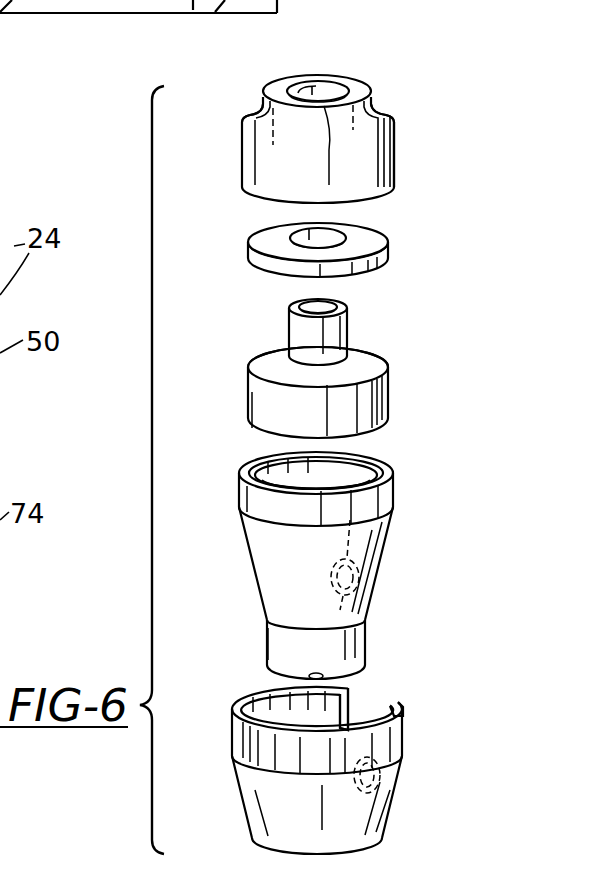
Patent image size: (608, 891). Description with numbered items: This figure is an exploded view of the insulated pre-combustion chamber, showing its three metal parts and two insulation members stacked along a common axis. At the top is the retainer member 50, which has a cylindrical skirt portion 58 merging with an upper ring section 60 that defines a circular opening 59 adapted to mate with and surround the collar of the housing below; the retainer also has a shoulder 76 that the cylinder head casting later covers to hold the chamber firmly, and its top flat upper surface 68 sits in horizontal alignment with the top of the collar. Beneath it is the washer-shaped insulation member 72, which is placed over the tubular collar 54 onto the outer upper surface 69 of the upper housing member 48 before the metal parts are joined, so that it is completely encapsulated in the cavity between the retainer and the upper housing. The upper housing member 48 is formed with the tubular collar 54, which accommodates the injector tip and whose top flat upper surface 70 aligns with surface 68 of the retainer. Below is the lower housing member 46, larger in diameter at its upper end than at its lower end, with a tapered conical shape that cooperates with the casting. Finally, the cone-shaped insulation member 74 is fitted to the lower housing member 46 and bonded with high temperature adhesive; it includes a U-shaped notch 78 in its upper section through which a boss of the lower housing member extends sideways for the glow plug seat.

The lower housing member 46 is at (268, 558).
The upper housing member 48 is at (260, 398).
The retainer member 50 is at (375, 164).
The tubular collar 54 is at (300, 329).
The cylindrical skirt portion 58 is at (260, 156).
The circular opening 59 is at (312, 95).
The upper ring section 60 is at (370, 105).
The top flat upper surface 68 is at (356, 88).
The outer upper surface 69 is at (360, 367).
The top flat upper surface 70 is at (297, 308).
The washer-shaped insulation member 72 is at (367, 247).
The cone-shaped insulation member 74 is at (263, 803).
The shoulder 76 is at (252, 107).
The U-shaped notch 78 is at (349, 705).